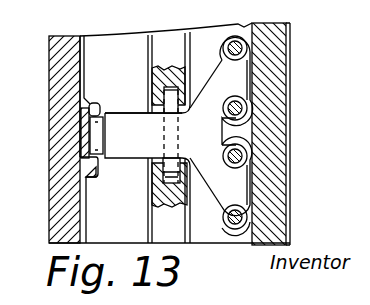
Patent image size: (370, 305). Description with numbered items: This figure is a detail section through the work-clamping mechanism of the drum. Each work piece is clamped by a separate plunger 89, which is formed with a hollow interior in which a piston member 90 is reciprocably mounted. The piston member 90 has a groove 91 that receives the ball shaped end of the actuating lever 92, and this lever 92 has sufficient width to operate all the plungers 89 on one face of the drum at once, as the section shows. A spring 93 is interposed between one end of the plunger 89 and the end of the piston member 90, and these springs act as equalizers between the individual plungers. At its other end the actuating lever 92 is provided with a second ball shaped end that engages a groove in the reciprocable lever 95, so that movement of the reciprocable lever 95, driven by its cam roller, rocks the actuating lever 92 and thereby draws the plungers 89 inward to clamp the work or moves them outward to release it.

The plunger 89 is at (238, 243).
The piston member 90 is at (256, 143).
The groove 91 is at (248, 116).
The actuating lever 92 is at (150, 152).
The spring 93 is at (102, 116).
The reciprocable lever 95 is at (94, 106).